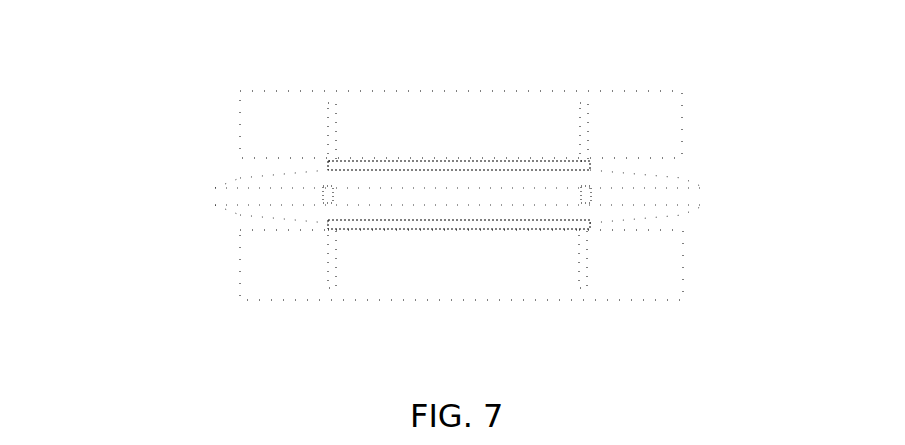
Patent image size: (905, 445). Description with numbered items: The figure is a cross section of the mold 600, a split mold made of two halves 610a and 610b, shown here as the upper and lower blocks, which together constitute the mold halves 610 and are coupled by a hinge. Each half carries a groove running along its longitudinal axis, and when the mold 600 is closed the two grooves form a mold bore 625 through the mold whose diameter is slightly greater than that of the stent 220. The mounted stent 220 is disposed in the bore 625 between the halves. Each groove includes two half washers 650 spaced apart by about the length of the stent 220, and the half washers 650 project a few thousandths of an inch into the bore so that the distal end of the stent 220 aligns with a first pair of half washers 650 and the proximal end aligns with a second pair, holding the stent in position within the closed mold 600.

The mold 600 is at (147, 97).
The mold halves 610 is at (640, 178).
The first mold half 610a is at (672, 104).
The second mold half 610b is at (677, 288).
The mold bore 625 is at (540, 161).
The half washers 650 is at (584, 105).
The stent 220 is at (328, 222).